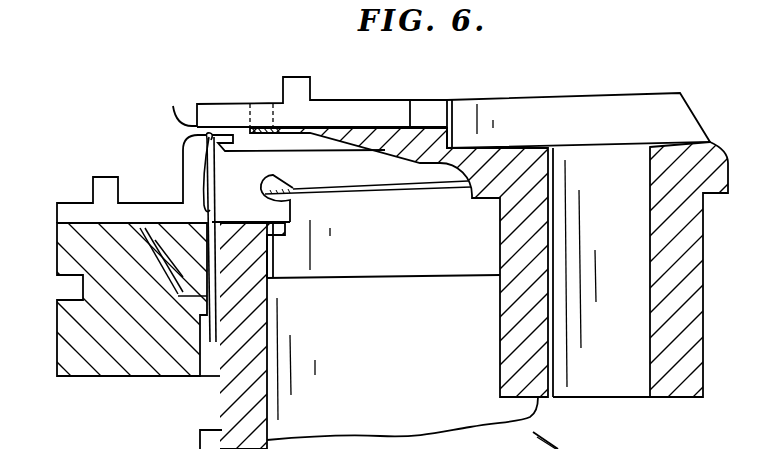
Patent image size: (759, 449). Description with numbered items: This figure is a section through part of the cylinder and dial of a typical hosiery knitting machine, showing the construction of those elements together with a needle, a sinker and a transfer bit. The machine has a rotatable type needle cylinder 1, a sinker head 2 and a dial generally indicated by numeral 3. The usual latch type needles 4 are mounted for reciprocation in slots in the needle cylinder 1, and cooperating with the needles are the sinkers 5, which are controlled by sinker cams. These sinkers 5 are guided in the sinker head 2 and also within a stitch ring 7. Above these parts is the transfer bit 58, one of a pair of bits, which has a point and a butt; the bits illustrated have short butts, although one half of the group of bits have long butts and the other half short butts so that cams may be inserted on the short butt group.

The needle cylinder 1 is at (252, 410).
The sinker head 2 is at (138, 364).
The dial 3 is at (507, 353).
The latch type needle 4 is at (212, 247).
The sinker 5 is at (298, 178).
The stitch ring 7 is at (292, 197).
The bit 58 is at (236, 96).